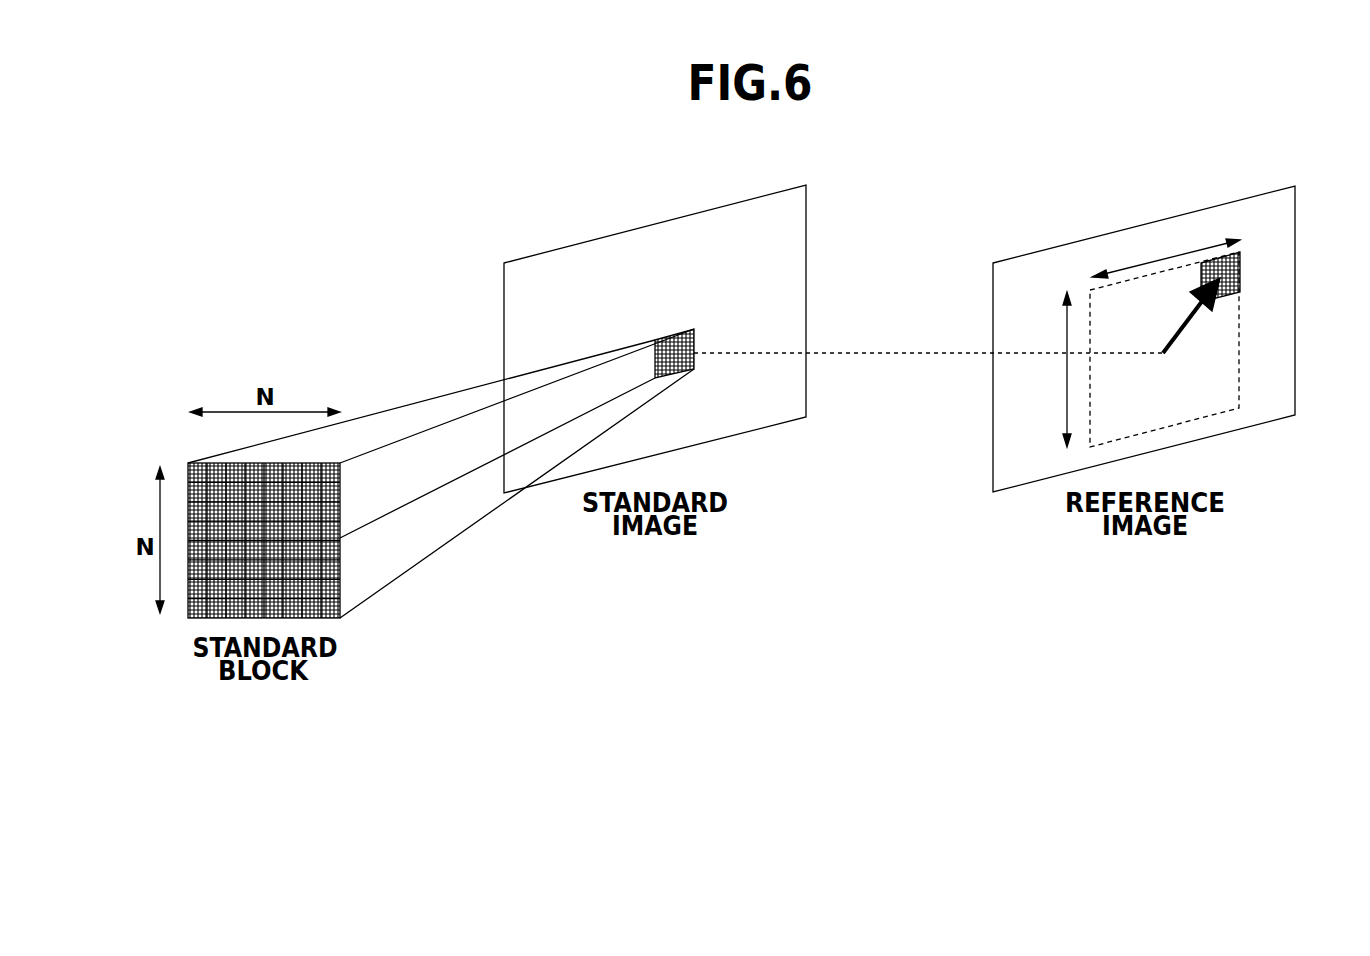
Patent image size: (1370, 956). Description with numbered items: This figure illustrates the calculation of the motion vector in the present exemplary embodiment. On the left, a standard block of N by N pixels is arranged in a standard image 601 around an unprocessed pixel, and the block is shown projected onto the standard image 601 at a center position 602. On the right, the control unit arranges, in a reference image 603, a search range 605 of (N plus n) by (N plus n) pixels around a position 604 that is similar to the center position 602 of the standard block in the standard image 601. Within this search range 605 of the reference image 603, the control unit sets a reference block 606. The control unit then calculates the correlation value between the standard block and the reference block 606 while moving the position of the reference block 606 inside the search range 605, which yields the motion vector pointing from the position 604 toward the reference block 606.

The standard image 601 is at (653, 224).
The center position of the standard block 602 is at (675, 357).
The reference image 603 is at (1193, 211).
The position similar to the center position of the standard block 604 is at (1163, 355).
The search range 605 is at (1242, 317).
The reference block 606 is at (1240, 267).